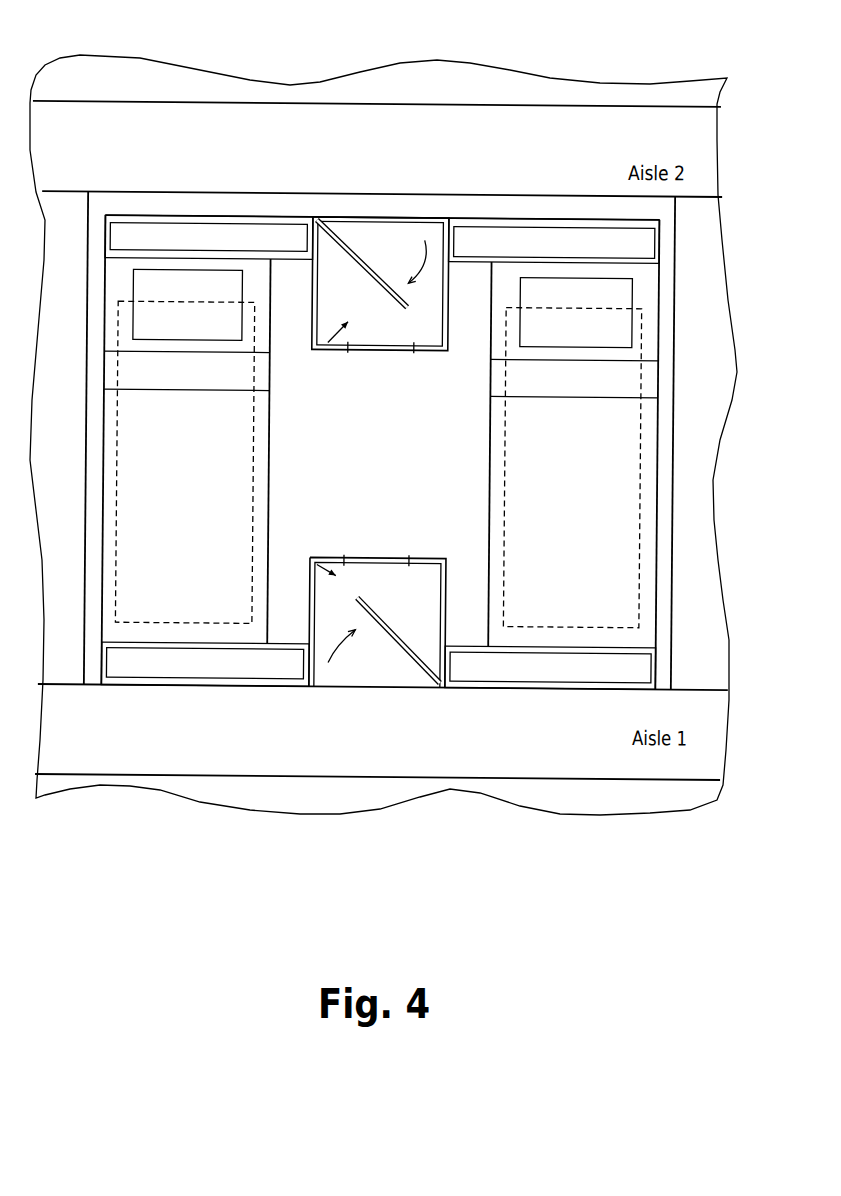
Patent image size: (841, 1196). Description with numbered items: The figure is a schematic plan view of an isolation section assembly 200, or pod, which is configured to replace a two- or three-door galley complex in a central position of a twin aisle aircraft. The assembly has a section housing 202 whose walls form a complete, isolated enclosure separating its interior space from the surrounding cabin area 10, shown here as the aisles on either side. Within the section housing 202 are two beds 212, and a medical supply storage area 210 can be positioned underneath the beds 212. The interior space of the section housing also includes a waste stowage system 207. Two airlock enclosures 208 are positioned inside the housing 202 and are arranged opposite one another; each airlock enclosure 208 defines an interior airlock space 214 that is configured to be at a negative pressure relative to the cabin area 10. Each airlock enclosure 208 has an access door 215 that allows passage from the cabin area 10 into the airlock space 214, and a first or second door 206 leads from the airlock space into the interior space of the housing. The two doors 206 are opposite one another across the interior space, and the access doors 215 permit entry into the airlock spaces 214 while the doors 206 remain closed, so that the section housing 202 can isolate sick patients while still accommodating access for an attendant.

The cabin area 10 is at (707, 635).
The isolation section assembly 200 is at (77, 133).
The section housing 202 is at (675, 307).
The doors 206 is at (338, 232).
The waste stowage system 207 is at (148, 230).
The airlock enclosures 208 is at (447, 331).
The medical supply storage area 210 is at (114, 494).
The beds 212 is at (198, 483).
The interior airlock space 214 is at (324, 348).
The access door 215 is at (397, 350).